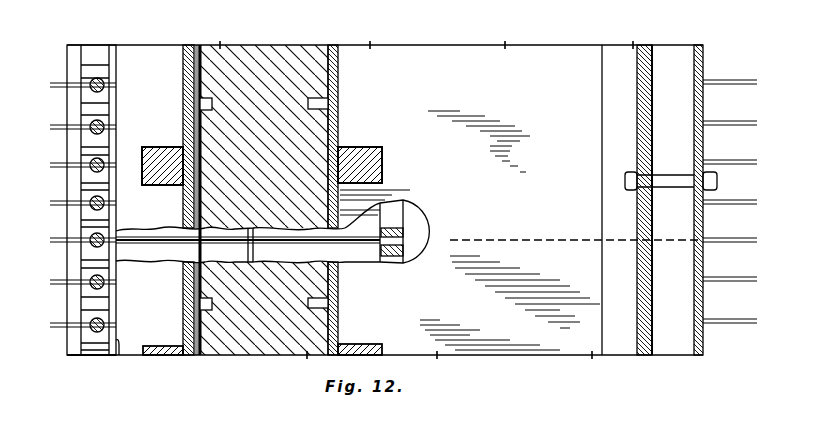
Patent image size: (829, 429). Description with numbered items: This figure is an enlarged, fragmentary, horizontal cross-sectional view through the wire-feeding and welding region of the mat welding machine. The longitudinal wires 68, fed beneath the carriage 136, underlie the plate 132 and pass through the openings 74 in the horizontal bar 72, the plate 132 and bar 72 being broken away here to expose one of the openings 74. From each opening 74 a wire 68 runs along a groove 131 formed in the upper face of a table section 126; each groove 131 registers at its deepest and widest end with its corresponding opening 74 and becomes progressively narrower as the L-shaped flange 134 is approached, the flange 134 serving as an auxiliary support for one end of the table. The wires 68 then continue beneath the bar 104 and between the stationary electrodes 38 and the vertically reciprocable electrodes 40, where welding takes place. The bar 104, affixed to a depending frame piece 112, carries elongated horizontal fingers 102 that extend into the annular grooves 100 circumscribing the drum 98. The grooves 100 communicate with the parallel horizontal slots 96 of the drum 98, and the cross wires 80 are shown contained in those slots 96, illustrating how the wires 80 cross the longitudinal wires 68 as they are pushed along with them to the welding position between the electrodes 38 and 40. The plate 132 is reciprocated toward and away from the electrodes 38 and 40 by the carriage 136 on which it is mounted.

The stationary welding electrodes 38 is at (75, 340).
The vertically reciprocable electrode 40 is at (94, 124).
The longitudinal wires 68 is at (70, 165).
The horizontal bar 72 is at (395, 210).
The opening 74 is at (403, 229).
The cross wires 80 is at (190, 66).
The slot 96 is at (186, 356).
The drum 98 is at (318, 209).
The annular grooves 100 is at (328, 103).
The finger 102 is at (198, 103).
The bar 104 is at (134, 54).
The frame piece 112 is at (165, 146).
The table section 126 is at (176, 260).
The groove 131 is at (178, 226).
The plate 132 is at (546, 48).
The L-shaped flange 134 is at (122, 355).
The carriage 136 is at (690, 20).